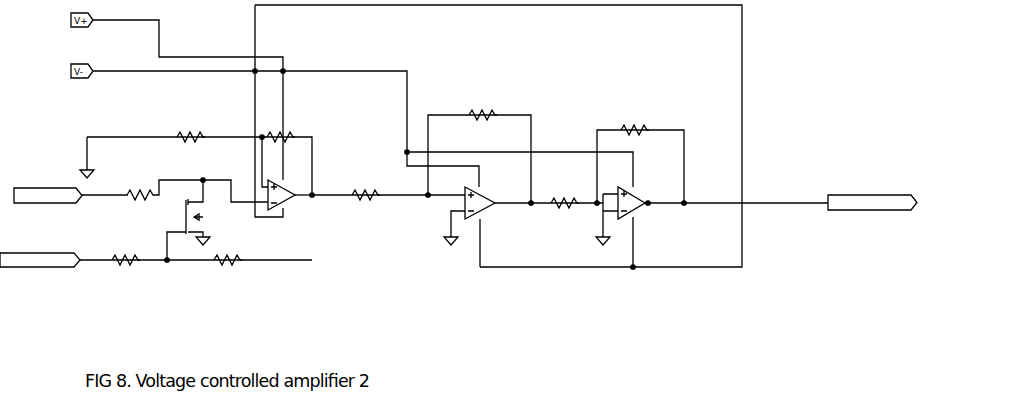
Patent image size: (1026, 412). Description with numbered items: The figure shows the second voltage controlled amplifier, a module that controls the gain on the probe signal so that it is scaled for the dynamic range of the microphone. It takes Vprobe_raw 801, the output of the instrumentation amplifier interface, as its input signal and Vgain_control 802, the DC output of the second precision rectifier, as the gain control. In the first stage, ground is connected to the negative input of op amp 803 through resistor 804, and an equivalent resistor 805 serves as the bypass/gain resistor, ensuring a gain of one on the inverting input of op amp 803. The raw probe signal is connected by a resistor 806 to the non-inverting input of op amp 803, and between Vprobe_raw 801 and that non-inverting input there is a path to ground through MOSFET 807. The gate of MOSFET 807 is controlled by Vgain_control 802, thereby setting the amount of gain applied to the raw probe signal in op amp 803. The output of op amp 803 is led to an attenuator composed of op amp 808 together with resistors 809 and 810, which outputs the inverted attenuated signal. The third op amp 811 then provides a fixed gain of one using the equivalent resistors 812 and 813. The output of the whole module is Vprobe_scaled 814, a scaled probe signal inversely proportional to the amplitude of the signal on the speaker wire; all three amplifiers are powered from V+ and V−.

The Vprobe_raw 801 is at (43, 186).
The Vgain_control 802 is at (37, 252).
The op amp 803 is at (302, 177).
The resistor 804 is at (195, 131).
The resistor 805 is at (283, 131).
The resistor 806 is at (143, 192).
The MOSFET 807 is at (200, 212).
The op amp 808 is at (482, 193).
The resistor 809 is at (373, 177).
The resistor 810 is at (482, 103).
The third op amp 811 is at (638, 192).
The resistor 812 is at (567, 185).
The resistor 813 is at (635, 123).
The Vprobe_scaled 814 is at (851, 194).